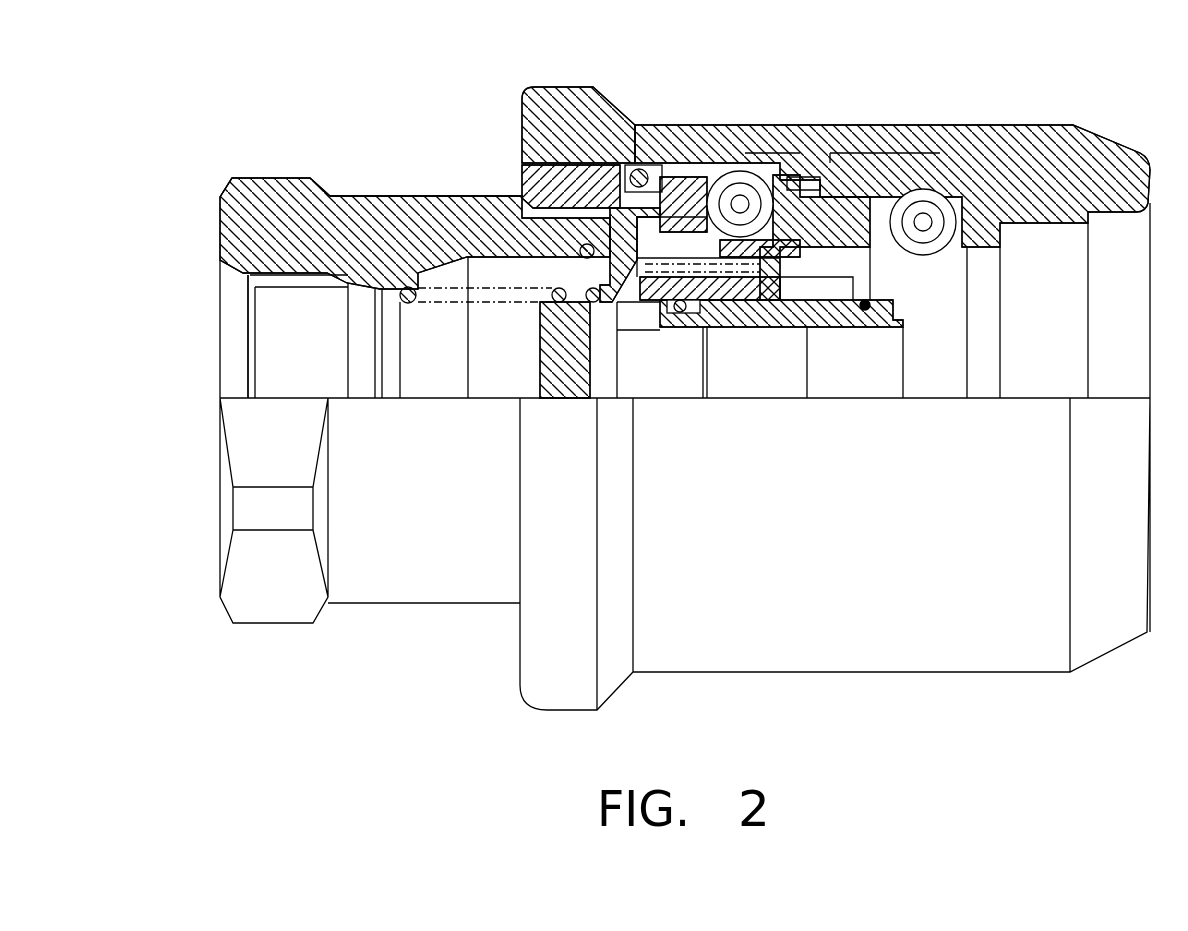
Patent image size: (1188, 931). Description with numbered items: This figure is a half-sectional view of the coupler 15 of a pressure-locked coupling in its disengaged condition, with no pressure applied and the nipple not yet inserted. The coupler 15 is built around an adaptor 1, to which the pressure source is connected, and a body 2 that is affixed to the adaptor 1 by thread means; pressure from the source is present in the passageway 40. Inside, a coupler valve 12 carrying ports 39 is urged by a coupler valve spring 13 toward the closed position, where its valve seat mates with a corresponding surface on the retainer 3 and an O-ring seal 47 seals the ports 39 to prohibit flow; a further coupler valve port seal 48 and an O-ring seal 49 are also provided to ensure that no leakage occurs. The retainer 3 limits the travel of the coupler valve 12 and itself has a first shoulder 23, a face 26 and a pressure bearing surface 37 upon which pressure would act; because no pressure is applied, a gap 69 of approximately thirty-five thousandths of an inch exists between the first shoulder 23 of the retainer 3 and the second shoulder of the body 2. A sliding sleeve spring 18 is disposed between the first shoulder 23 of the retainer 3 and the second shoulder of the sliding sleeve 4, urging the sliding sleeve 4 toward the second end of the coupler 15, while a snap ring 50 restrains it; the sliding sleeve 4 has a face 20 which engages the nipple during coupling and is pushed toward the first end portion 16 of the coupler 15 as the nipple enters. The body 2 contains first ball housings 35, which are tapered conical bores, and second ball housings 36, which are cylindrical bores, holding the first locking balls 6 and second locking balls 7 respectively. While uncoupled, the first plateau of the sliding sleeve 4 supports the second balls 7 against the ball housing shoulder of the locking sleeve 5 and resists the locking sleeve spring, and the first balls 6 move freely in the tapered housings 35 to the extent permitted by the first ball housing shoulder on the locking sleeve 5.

The adaptor 1 is at (258, 192).
The coupler 15 is at (320, 165).
The pressure bearing surface 37 is at (447, 212).
The body 2 is at (518, 177).
The first end portion 16 is at (215, 218).
The passageway 40 is at (273, 320).
The O-ring seal 49 is at (580, 245).
The retainer 3 is at (615, 180).
The gap 69 is at (688, 125).
The second ball housings 36 is at (735, 150).
The second locking balls 7 is at (760, 165).
The sliding sleeve 4 is at (815, 262).
The locking sleeve 5 is at (880, 180).
The first locking balls 6 is at (950, 165).
The first ball housings 35 is at (893, 247).
The sliding sleeve spring 18 is at (717, 262).
The ports 39 is at (643, 320).
The face 26 is at (773, 277).
The first shoulder 23 is at (617, 367).
The coupler valve port seal 48 is at (683, 320).
The O-ring seal 47 is at (592, 303).
The coupler valve spring 13 is at (433, 293).
The coupler valve 12 is at (533, 367).
The snap ring 50 is at (865, 310).
The face 20 is at (863, 262).